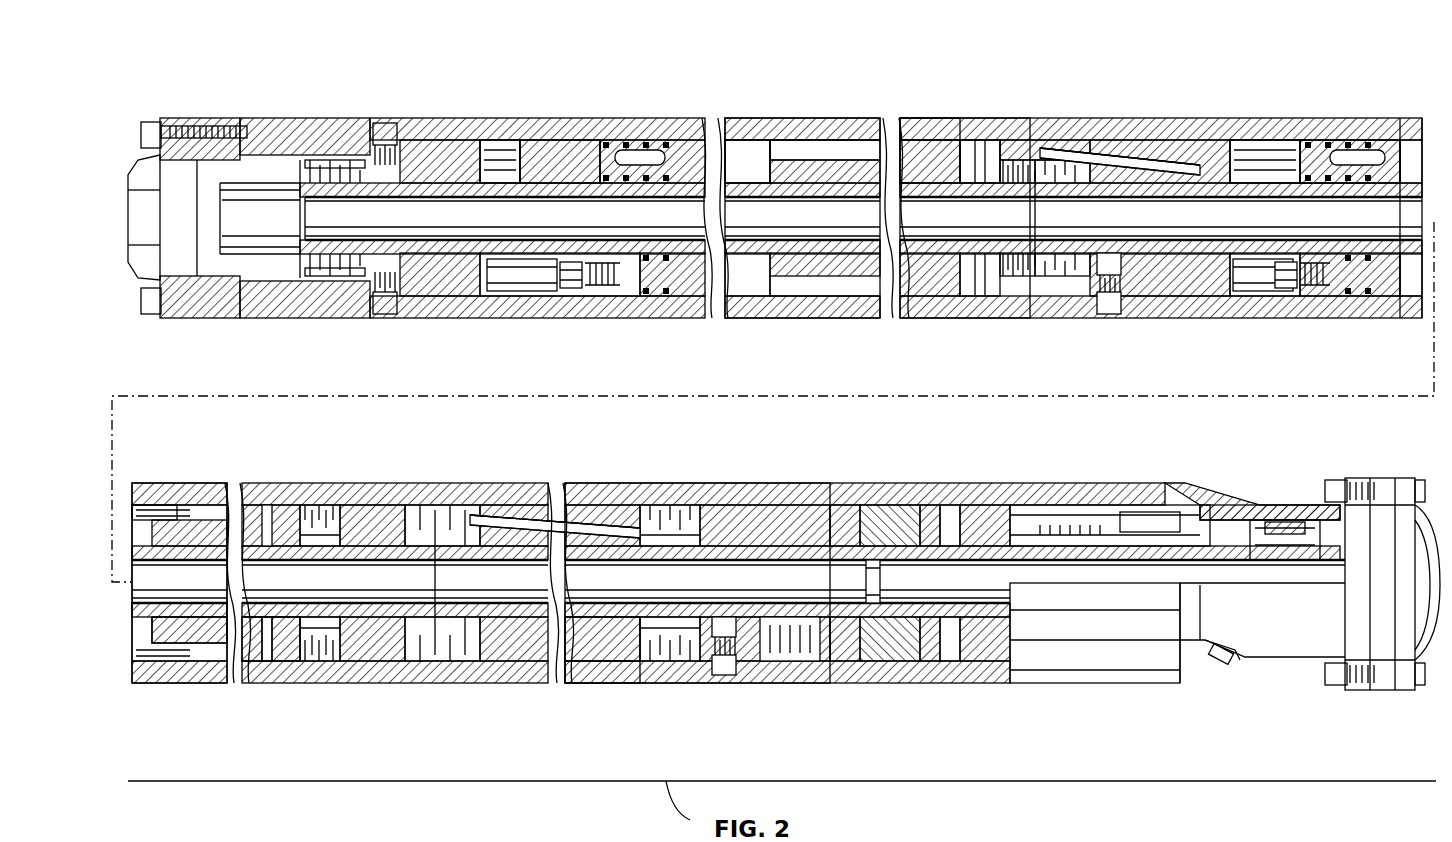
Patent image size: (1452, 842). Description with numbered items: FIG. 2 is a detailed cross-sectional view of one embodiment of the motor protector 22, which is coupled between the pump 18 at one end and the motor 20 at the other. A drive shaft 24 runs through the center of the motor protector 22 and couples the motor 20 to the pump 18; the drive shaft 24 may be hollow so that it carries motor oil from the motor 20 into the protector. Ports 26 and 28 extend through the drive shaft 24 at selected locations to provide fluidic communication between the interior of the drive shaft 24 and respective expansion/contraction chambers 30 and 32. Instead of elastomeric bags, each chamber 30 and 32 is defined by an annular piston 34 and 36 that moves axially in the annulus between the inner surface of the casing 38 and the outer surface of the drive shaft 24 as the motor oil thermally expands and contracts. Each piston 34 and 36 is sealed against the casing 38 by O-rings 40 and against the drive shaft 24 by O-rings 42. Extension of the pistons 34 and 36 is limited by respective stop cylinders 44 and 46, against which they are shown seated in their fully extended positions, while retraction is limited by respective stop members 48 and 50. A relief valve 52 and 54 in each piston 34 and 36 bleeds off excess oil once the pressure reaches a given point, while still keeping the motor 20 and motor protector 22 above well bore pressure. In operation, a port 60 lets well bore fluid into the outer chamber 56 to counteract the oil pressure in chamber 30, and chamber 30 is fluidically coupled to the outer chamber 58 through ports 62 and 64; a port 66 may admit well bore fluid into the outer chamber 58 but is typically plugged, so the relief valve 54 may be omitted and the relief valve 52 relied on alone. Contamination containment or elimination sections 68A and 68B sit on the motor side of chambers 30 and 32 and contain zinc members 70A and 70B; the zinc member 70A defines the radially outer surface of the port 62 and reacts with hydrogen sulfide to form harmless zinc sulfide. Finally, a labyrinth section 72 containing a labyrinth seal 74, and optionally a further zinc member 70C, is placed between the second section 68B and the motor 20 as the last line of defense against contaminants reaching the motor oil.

The pump 18 is at (132, 77).
The motor 20 is at (1430, 745).
The motor protector 22 is at (760, 100).
The drive shaft 24 is at (1404, 318).
The port 26 is at (982, 140).
The port 28 is at (273, 640).
The expansion/contraction chamber 30 is at (724, 140).
The expansion/contraction chamber 32 is at (146, 505).
The piston 34 is at (591, 140).
The piston 36 is at (1307, 140).
The casing 38 is at (578, 683).
The O-rings 40 is at (1370, 140).
The O-rings 42 is at (671, 140).
The stop cylinder 44 is at (531, 146).
The stop cylinder 46 is at (1258, 140).
The stop member 48 is at (788, 140).
The stop member 50 is at (170, 636).
The relief valve 52 is at (573, 296).
The relief valve 54 is at (1283, 296).
The outer chamber 56 is at (527, 296).
The outer chamber 58 is at (1240, 296).
The port 60 is at (383, 126).
The port 62 is at (926, 140).
The port 64 is at (1118, 160).
The port 66 is at (1108, 316).
The contamination containment or elimination section 68A is at (832, 105).
The contamination containment or elimination section 68B is at (210, 683).
The zinc member 70A is at (877, 140).
The zinc member 70B is at (256, 661).
The zinc member 70C is at (530, 661).
The labyrinth section 72 is at (563, 684).
The labyrinth seal 74 is at (540, 520).